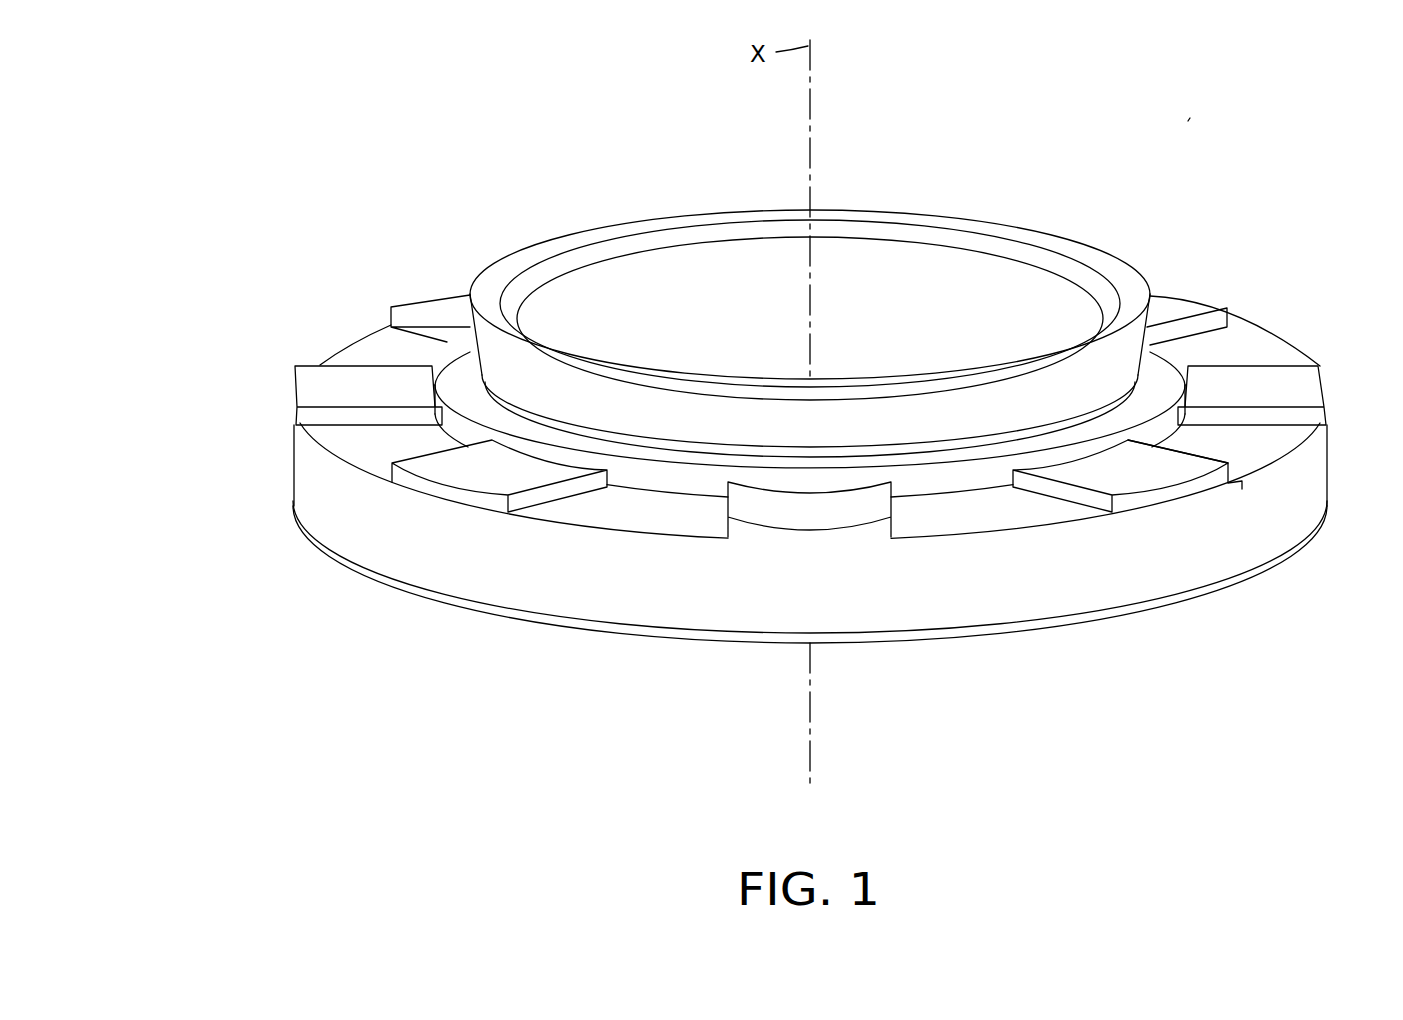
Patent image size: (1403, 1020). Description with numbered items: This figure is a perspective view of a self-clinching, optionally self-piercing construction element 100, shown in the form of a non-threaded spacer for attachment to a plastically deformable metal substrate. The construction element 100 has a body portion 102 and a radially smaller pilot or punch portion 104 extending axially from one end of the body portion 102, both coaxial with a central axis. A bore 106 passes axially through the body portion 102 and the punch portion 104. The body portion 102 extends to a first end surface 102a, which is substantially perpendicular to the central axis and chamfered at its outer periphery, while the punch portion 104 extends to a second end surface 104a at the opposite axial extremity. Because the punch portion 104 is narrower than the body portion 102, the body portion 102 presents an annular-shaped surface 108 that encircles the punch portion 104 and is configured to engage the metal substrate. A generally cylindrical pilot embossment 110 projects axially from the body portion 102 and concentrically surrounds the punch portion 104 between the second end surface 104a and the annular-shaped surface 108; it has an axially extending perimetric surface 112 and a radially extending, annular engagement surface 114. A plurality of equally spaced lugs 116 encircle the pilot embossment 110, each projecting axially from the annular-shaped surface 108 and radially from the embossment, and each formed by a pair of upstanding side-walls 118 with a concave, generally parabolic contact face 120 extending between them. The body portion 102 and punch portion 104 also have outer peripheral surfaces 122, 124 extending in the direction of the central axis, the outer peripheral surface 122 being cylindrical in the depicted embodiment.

The construction element 100 is at (1186, 122).
The body portion 102 is at (250, 458).
The first end surface 102a is at (952, 646).
The punch portion 104 is at (562, 226).
The second end surface 104a is at (664, 222).
The bore 106 is at (925, 295).
The annular-shaped surface 108 is at (1280, 357).
The pilot embossment 110 is at (1198, 346).
The perimetric surface 112 is at (457, 423).
The engagement surface 114 is at (1156, 346).
The lugs 116 is at (722, 515).
The side-walls 118 is at (1047, 487).
The contact face 120 is at (1158, 466).
The outer peripheral surface of the body portion 122 is at (472, 582).
The outer peripheral surface of the punch portion 124 is at (458, 356).